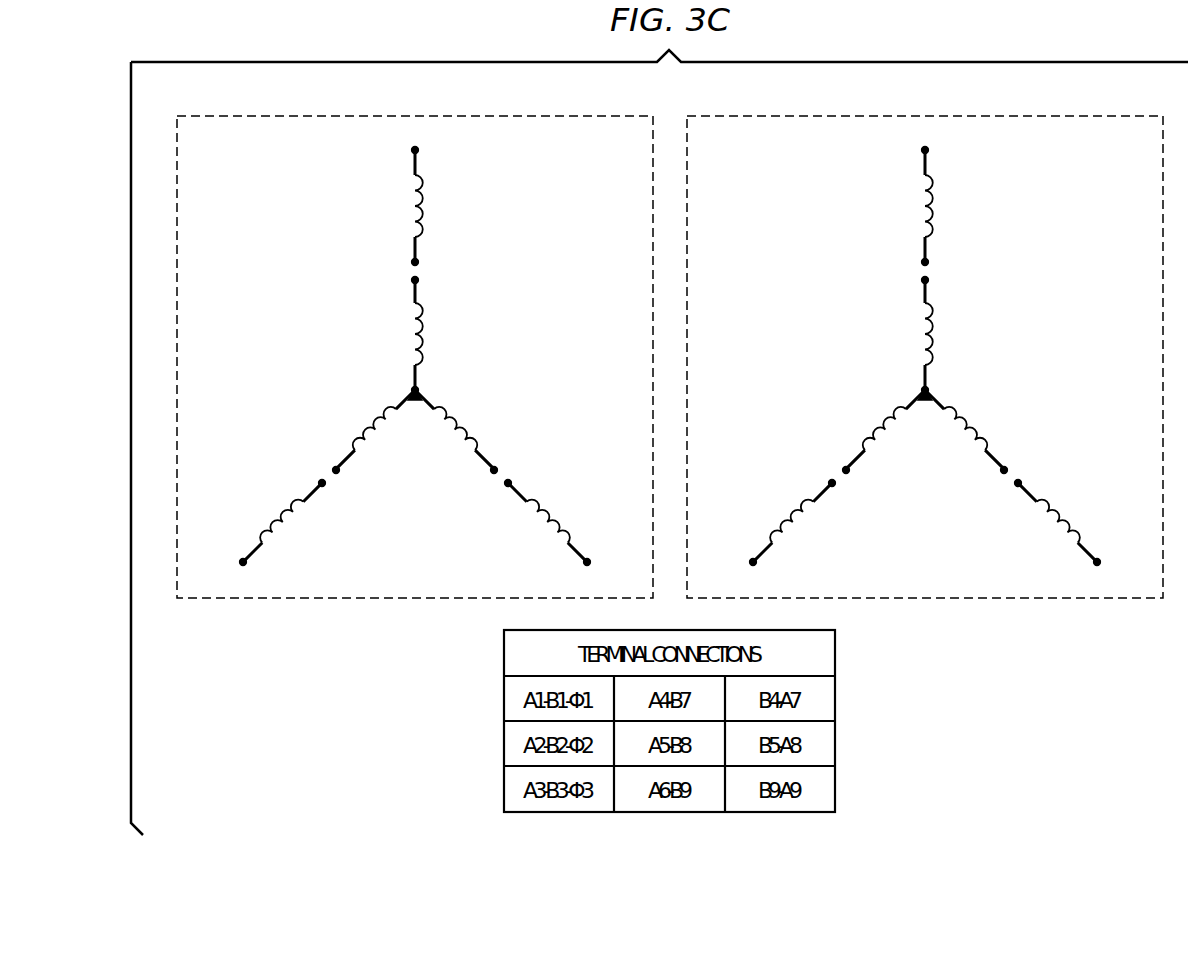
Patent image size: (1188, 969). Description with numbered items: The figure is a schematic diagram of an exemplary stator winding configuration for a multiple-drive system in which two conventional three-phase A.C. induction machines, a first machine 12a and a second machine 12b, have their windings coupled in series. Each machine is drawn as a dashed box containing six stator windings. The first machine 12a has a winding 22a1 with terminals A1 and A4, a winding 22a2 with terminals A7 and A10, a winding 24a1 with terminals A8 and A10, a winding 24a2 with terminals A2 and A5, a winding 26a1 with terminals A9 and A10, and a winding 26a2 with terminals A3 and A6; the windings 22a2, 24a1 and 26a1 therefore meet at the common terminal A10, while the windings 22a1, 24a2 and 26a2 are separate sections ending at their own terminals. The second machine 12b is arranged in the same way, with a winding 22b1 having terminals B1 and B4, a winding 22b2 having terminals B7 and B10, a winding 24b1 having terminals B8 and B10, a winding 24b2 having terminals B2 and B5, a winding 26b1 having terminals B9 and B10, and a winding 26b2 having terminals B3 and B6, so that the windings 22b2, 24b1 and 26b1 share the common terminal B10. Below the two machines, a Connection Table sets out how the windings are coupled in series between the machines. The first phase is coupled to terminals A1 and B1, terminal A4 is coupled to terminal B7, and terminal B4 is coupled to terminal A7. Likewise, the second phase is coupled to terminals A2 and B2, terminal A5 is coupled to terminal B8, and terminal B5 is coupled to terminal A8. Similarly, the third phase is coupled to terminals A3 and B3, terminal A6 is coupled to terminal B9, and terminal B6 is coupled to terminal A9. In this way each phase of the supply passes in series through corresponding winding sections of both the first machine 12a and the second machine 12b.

The first machine 12a is at (585, 116).
The second machine 12b is at (925, 338).
The stator winding 22a1 is at (425, 203).
The stator winding 22a2 is at (425, 333).
The stator winding 24a1 is at (465, 422).
The stator winding 24a2 is at (555, 515).
The stator winding 26a1 is at (365, 422).
The stator winding 26a2 is at (275, 515).
The stator winding 22b1 is at (963, 206).
The stator winding 22b2 is at (963, 334).
The stator winding 24b1 is at (991, 423).
The stator winding 24b2 is at (1083, 515).
The stator winding 26b1 is at (859, 422).
The stator winding 26b2 is at (768, 514).
The terminal A1 is at (415, 150).
The terminal A2 is at (587, 562).
The terminal A3 is at (243, 562).
The terminal A4 is at (415, 262).
The terminal A5 is at (508, 483).
The terminal A6 is at (322, 483).
The terminal A7 is at (415, 280).
The terminal A8 is at (494, 470).
The terminal A9 is at (336, 470).
The terminal A10 is at (415, 390).
The terminal B1 is at (902, 140).
The terminal B2 is at (1119, 545).
The terminal B3 is at (734, 545).
The terminal B4 is at (904, 245).
The terminal B5 is at (998, 503).
The terminal B6 is at (855, 502).
The terminal B7 is at (902, 270).
The terminal B8 is at (1027, 453).
The terminal B9 is at (826, 452).
The terminal B10 is at (898, 382).